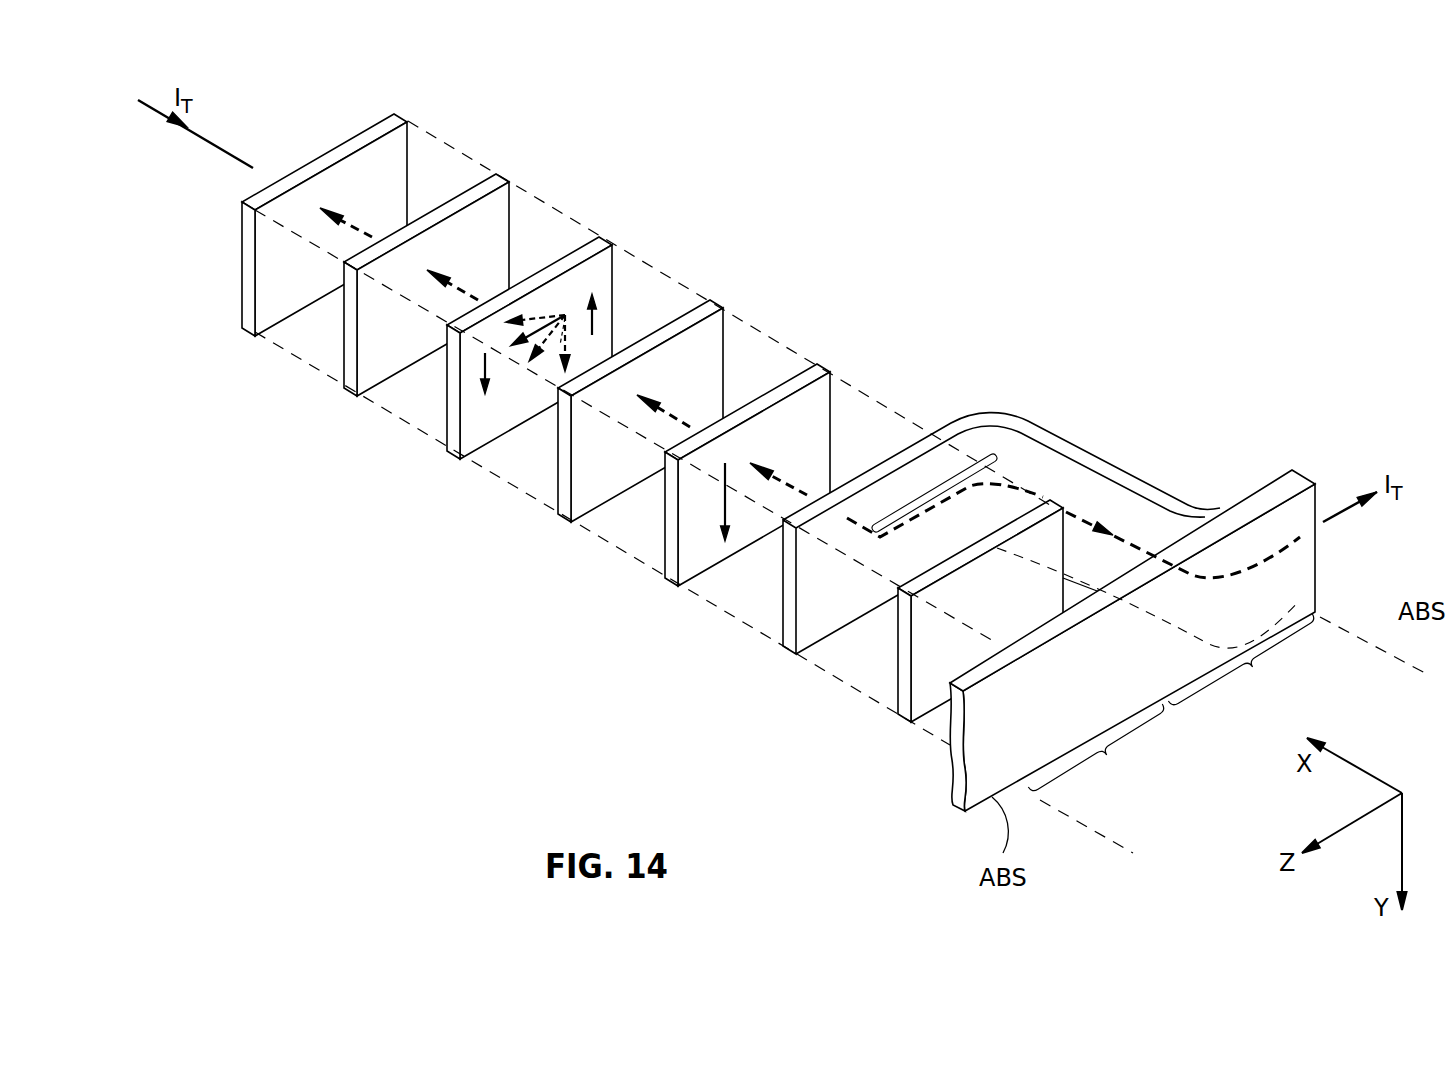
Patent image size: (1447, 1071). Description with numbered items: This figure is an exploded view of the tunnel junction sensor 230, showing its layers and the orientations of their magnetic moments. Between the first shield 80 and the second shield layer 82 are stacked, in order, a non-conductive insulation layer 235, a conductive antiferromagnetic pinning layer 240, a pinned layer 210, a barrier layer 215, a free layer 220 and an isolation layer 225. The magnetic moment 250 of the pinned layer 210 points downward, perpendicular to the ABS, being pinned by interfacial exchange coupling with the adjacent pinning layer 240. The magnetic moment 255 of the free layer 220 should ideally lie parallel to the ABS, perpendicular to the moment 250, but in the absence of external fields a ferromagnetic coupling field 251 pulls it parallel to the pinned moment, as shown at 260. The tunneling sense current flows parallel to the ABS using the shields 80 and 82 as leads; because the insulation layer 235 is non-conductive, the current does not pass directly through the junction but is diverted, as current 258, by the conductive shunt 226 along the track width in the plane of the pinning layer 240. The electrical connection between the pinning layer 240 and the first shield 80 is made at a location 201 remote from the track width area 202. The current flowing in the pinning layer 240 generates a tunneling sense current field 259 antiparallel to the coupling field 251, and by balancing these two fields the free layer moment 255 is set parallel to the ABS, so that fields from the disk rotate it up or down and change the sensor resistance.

The first shield 80 is at (953, 777).
The second shield layer 82 is at (242, 265).
The location 201 is at (1240, 661).
The track width area 202 is at (1095, 749).
The pinned layer 210 is at (660, 510).
The barrier layer 215 is at (560, 450).
The free layer 220 is at (570, 252).
The isolation layer 225 is at (345, 325).
The conductive shunt 226 is at (1127, 473).
The tunnel junction sensor 230 is at (1228, 355).
The insulation layer 235 is at (900, 655).
The conductive antiferromagnetic pinning layer 240 is at (787, 597).
The magnetic moment (M_P) of the pinned layer 250 is at (718, 507).
The ferromagnetic coupling field (H_FC) 251 is at (483, 367).
The magnetic moment (M_F) of the free layer 255 is at (540, 322).
The diverted current 258 is at (933, 480).
The tunneling sense current field (H_I) 259 is at (593, 323).
The parallel orientation of the free layer moment 260 is at (567, 343).